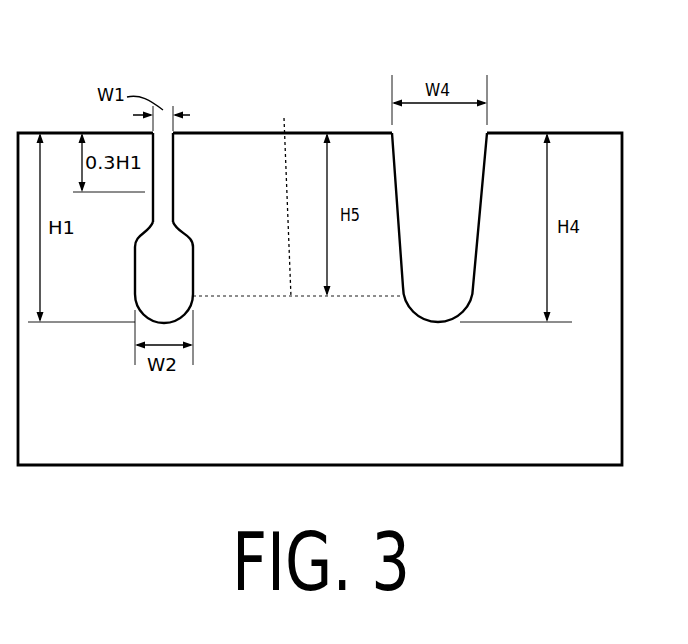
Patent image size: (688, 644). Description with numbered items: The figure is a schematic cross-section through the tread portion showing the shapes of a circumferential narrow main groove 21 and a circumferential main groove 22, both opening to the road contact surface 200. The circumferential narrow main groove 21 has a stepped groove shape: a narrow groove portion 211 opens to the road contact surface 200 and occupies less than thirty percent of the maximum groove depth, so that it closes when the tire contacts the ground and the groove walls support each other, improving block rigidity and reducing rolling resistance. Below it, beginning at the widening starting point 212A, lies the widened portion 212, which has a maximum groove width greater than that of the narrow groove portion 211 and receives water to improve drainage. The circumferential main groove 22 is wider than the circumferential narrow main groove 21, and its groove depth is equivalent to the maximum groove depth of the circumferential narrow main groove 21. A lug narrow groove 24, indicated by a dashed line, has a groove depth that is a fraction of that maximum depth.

The road contact surface 200 is at (236, 133).
The circumferential narrow main groove 21 is at (201, 180).
The narrow groove portion 211 is at (176, 181).
The widening starting point 212A is at (177, 223).
The widened portion 212 is at (192, 259).
The lug narrow groove 24 is at (286, 197).
The circumferential main groove 22 is at (483, 180).